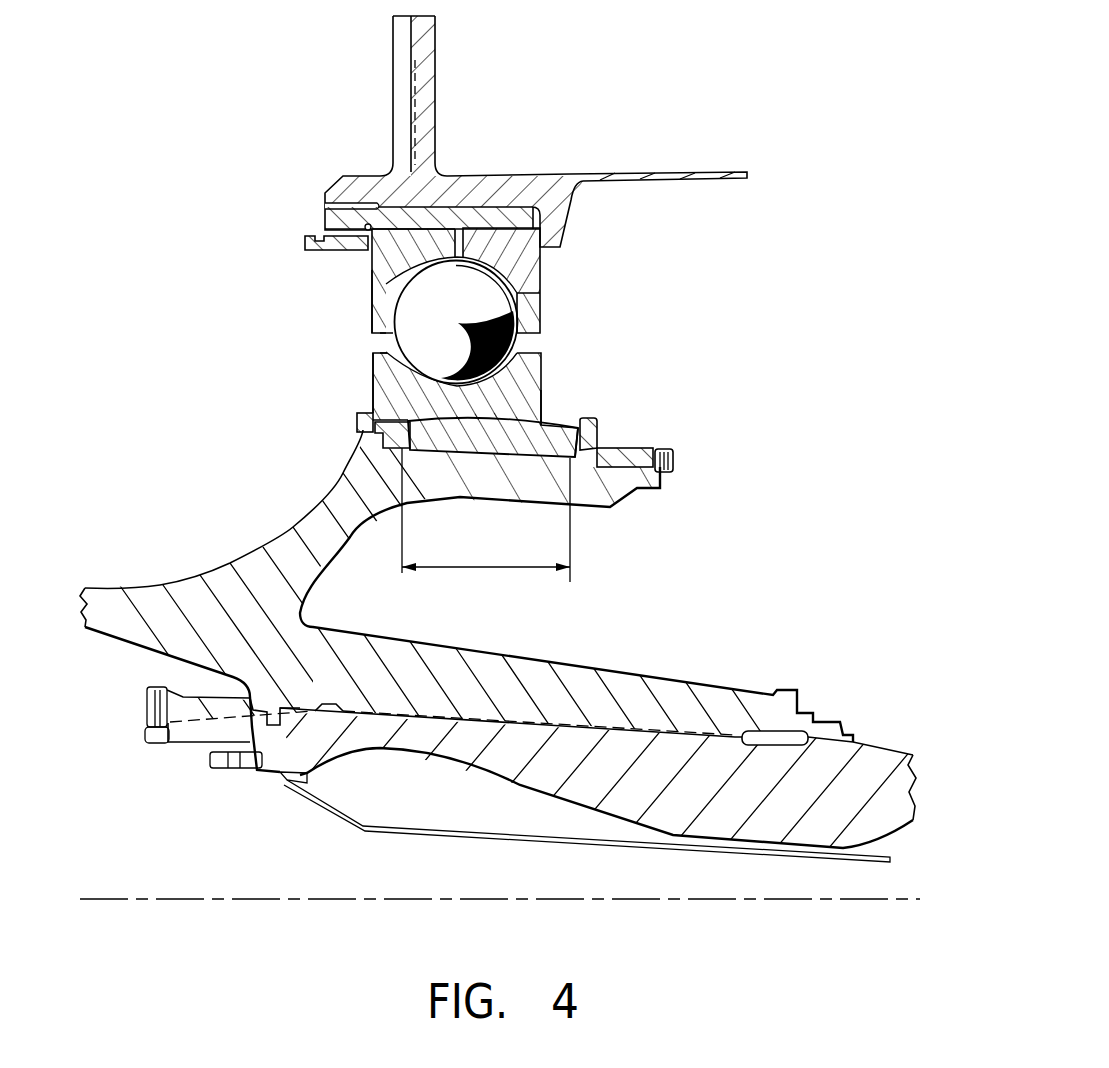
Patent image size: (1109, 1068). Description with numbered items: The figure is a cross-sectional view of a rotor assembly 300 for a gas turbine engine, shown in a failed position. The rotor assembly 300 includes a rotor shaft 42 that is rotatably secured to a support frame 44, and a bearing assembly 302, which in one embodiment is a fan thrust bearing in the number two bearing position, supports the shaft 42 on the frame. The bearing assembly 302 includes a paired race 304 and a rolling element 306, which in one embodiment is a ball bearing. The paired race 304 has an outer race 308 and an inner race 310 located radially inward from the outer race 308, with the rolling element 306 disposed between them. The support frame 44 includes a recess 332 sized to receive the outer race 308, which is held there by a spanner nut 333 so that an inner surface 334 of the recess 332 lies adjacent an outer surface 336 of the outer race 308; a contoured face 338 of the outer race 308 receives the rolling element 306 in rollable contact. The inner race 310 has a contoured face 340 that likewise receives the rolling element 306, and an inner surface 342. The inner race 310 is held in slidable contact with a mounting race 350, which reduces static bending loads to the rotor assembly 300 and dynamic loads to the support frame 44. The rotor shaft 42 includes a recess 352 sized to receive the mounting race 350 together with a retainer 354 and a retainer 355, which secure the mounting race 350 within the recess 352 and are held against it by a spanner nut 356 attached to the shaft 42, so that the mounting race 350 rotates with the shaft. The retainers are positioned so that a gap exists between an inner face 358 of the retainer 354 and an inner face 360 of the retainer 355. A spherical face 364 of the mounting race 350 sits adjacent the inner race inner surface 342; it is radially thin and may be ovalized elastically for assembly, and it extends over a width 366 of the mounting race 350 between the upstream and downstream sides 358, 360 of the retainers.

The rotor assembly 300 is at (425, 139).
The bearing assembly 302 is at (466, 561).
The paired race 304 is at (508, 307).
The rolling element 306 is at (472, 315).
The outer race 308 is at (546, 258).
The inner race 310 is at (543, 367).
The recess 332 is at (498, 172).
The spanner nut 333 is at (305, 242).
The inner surface 334 is at (372, 256).
The outer surface 336 is at (423, 229).
The face 338 is at (384, 280).
The face 340 is at (392, 345).
The inner surface 342 is at (373, 398).
The mounting race 350 is at (547, 420).
The recess 352 is at (490, 472).
The retainer 354 is at (337, 495).
The retainer 355 is at (602, 427).
The spanner nut 356 is at (645, 453).
The inner face 358 is at (413, 448).
The inner face 360 is at (568, 433).
The face 364 is at (374, 372).
The width 366 is at (483, 570).
The rotor shaft 42 is at (533, 775).
The support frame 44 is at (645, 173).